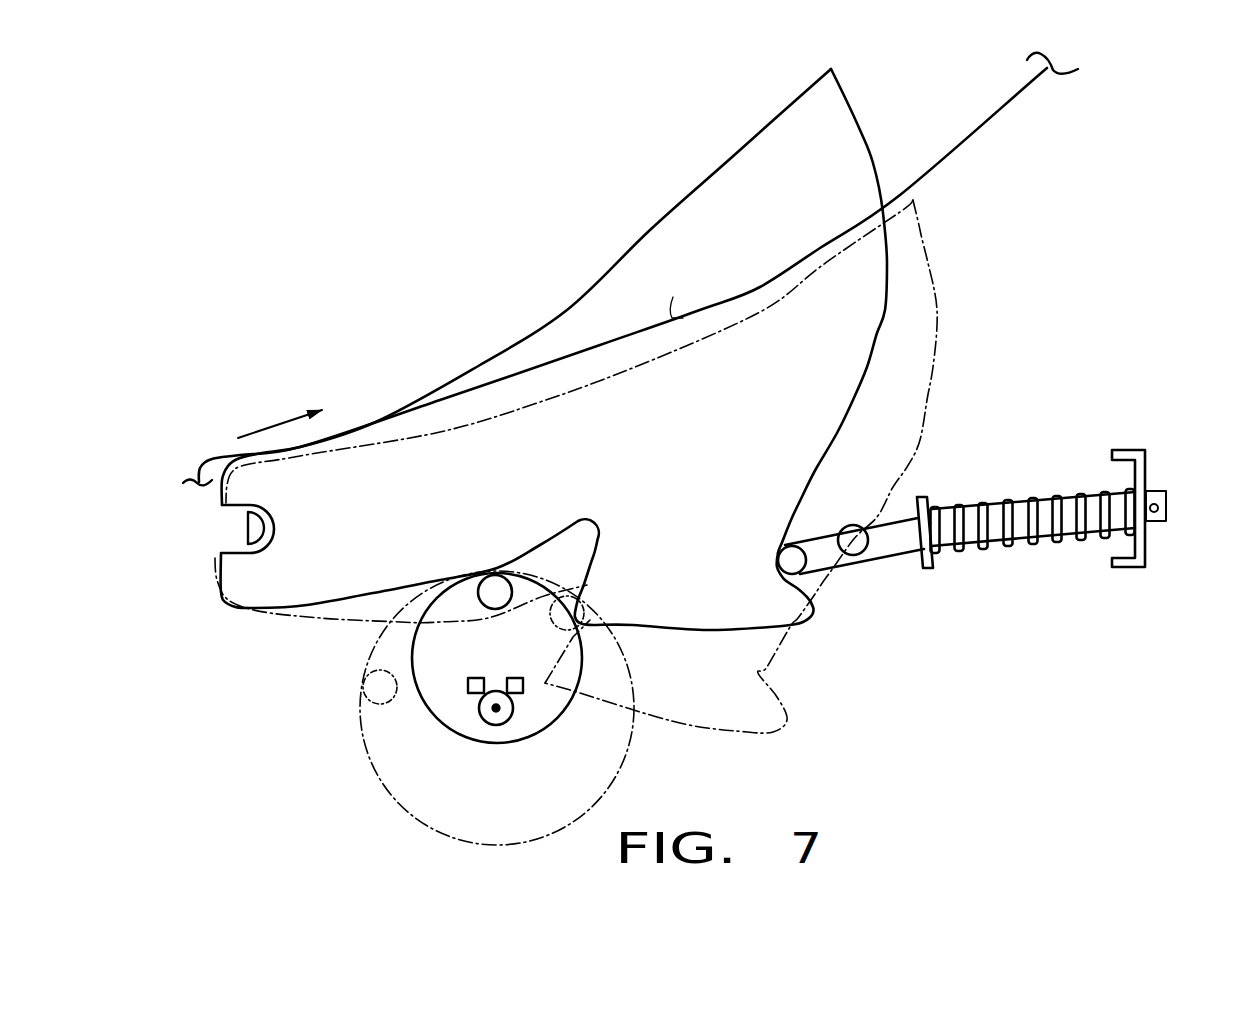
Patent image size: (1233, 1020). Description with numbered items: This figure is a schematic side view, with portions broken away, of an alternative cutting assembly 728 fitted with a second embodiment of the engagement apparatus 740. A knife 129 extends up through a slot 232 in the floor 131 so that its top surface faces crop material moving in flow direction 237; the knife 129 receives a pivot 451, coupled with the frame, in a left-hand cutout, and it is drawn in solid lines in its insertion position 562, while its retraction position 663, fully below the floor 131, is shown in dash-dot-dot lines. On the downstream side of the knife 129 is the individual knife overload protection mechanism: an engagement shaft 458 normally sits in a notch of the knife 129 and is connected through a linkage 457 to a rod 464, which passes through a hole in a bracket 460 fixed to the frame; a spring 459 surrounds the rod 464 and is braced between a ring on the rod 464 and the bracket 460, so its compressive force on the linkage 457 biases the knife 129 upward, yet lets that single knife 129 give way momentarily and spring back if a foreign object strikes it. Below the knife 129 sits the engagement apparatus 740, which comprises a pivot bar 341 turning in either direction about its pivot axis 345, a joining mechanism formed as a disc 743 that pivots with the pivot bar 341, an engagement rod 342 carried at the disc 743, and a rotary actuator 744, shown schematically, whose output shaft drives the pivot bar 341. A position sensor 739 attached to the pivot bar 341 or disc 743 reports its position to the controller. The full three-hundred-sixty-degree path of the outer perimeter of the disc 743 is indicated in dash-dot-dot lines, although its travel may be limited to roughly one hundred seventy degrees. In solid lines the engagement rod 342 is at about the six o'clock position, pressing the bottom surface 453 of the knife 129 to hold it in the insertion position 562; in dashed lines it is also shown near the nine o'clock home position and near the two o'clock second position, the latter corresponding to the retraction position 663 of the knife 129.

The cutting assembly 728 is at (684, 449).
The insertion position 562 is at (850, 95).
The knife 129 is at (868, 148).
The floor 131 is at (1005, 107).
The retraction position 663 is at (929, 231).
The slot 232 is at (673, 297).
The flow direction 237 is at (284, 421).
The pivot 451 is at (247, 530).
The engagement rod 342 is at (478, 593).
The bottom surface 453 is at (558, 545).
The linkage 457 is at (828, 567).
The engagement shaft 458 is at (805, 545).
The spring 459 is at (1032, 543).
The rod 464 is at (1047, 507).
The bracket 460 is at (1133, 568).
The engagement apparatus 740 is at (365, 812).
The disc 743 is at (456, 735).
The rotary actuator 744 is at (468, 687).
The sensor 739 is at (523, 684).
The pivot axis 345 is at (500, 712).
The pivot bar 341 is at (495, 724).